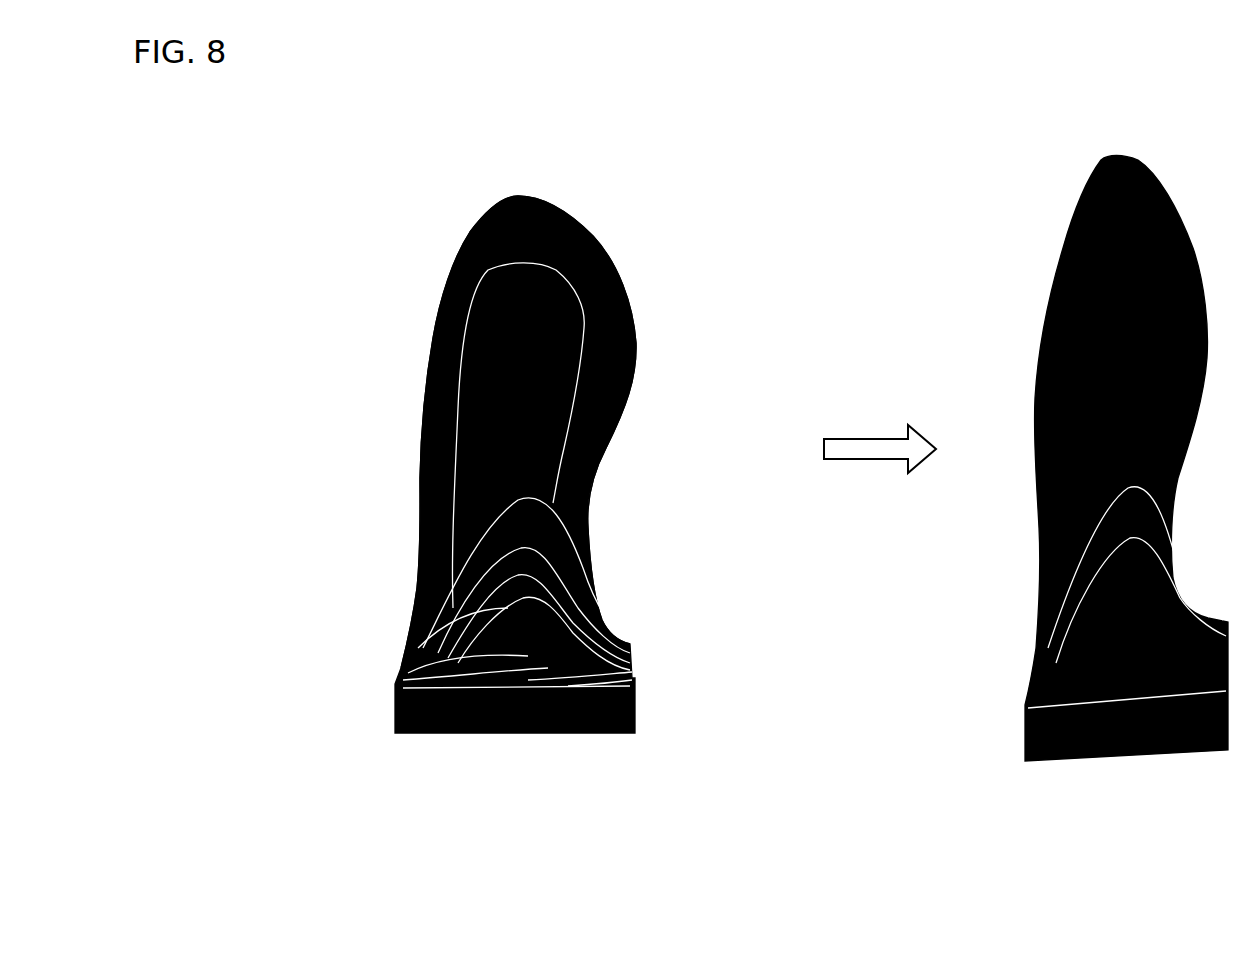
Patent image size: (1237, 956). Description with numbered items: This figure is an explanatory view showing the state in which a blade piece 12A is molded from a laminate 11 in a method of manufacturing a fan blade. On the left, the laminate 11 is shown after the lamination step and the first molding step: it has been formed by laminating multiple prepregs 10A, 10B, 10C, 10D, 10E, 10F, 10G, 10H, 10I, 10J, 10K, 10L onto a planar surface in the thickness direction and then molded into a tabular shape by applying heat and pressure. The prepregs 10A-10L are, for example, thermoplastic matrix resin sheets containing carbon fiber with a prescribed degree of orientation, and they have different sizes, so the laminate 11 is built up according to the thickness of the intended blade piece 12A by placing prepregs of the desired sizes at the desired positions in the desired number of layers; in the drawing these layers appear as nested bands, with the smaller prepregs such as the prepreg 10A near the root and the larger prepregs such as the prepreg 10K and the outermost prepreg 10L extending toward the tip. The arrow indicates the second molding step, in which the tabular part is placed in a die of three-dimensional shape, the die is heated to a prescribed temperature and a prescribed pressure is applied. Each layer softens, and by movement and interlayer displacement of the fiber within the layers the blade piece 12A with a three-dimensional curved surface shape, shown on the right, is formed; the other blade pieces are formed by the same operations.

The laminate 11 is at (424, 163).
The blade piece 12A is at (1031, 171).
The prepreg 10A is at (620, 680).
The prepreg 10B is at (605, 680).
The prepreg 10C is at (548, 680).
The prepreg 10D is at (515, 680).
The prepreg 10E is at (485, 640).
The prepreg 10F is at (480, 620).
The prepreg 10G is at (540, 605).
The prepreg 10H is at (535, 587).
The prepreg 10I is at (533, 562).
The prepreg 10J is at (530, 522).
The prepreg 10K is at (563, 315).
The prepreg 10L is at (590, 258).